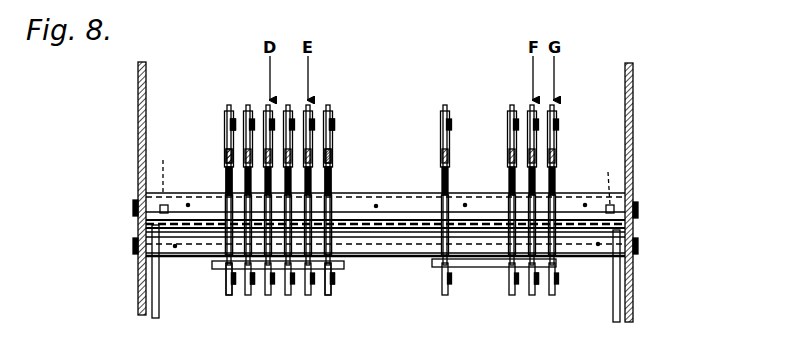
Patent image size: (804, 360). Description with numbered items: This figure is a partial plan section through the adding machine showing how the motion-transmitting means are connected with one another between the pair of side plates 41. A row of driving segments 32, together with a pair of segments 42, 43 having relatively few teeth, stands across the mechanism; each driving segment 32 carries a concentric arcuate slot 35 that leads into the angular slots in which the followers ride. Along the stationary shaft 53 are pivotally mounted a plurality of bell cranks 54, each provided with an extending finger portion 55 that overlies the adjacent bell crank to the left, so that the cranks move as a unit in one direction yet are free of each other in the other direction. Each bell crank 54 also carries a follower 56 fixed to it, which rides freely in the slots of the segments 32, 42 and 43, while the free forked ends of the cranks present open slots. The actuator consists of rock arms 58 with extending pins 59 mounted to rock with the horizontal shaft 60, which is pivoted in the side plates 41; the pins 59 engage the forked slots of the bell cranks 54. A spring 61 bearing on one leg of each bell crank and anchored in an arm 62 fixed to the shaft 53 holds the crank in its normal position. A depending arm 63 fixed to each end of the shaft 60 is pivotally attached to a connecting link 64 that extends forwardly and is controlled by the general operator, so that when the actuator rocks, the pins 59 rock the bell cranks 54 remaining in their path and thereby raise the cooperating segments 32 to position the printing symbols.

The side plates 41 is at (138, 150).
The driving segment 32 is at (231, 105).
The concentric arcuate slot 35 is at (248, 146).
The segment 42 is at (511, 105).
The segment 43 is at (446, 105).
The shaft 53 is at (398, 193).
The bell crank 54 is at (228, 182).
The extending finger portion 55 is at (218, 275).
The follower 56 is at (336, 124).
The rock arm 58 is at (234, 285).
The pin 59 is at (334, 282).
The shaft 60 is at (638, 246).
The spring 61 is at (226, 200).
The arm 62 is at (214, 268).
The depending arm 63 is at (388, 175).
The connecting link 64 is at (159, 315).